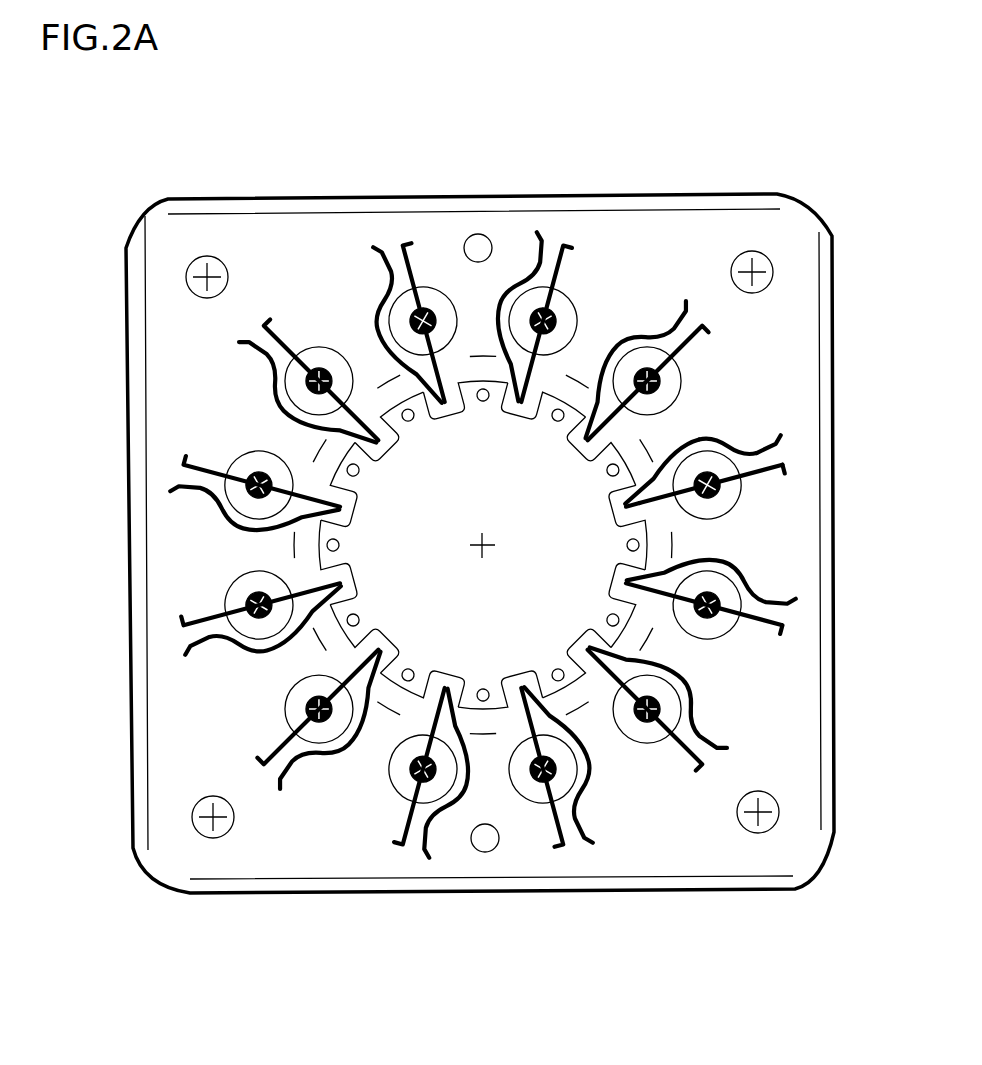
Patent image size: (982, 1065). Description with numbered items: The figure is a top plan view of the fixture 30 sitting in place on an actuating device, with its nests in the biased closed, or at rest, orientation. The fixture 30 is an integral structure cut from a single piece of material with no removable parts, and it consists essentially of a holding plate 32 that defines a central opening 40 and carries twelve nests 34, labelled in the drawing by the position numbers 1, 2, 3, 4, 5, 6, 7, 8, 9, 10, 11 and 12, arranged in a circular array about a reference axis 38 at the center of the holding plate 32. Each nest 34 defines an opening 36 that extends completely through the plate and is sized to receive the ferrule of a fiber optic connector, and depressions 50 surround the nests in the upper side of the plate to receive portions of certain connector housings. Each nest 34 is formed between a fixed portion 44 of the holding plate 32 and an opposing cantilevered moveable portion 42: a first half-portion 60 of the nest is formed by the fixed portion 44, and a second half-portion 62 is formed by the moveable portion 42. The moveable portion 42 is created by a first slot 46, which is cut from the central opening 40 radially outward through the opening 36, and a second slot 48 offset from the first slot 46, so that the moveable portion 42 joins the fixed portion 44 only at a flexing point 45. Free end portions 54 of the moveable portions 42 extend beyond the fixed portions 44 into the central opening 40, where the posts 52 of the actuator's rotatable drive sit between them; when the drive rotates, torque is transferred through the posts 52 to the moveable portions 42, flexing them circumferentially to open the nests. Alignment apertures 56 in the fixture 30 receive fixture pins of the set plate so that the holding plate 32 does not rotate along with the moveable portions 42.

The fixture 30 is at (233, 158).
The holding plate 32 is at (319, 190).
The nest 34 is at (419, 310).
The opening 36 is at (433, 315).
The reference axis 38 is at (476, 541).
The central opening 40 is at (332, 555).
The moveable portion 42 is at (677, 440).
The fixed portion 44 is at (684, 521).
The flexing point 45 is at (781, 450).
The first slot 46 is at (781, 463).
The second slot 48 is at (673, 442).
The depression 50 is at (704, 637).
The post 52 is at (611, 611).
The free end portion 54 is at (617, 502).
The alignment aperture 56 is at (480, 235).
The first half-portion 60 is at (720, 487).
The second half-portion 62 is at (709, 470).
The contact position 1 is at (314, 372).
The contact position 2 is at (400, 325).
The contact position 3 is at (537, 319).
The contact position 4 is at (642, 367).
The contact position 5 is at (710, 455).
The contact position 6 is at (712, 603).
The contact position 7 is at (663, 704).
The contact position 8 is at (561, 767).
The contact position 9 is at (428, 770).
The contact position 10 is at (309, 713).
The contact position 11 is at (260, 619).
The contact position 12 is at (257, 483).